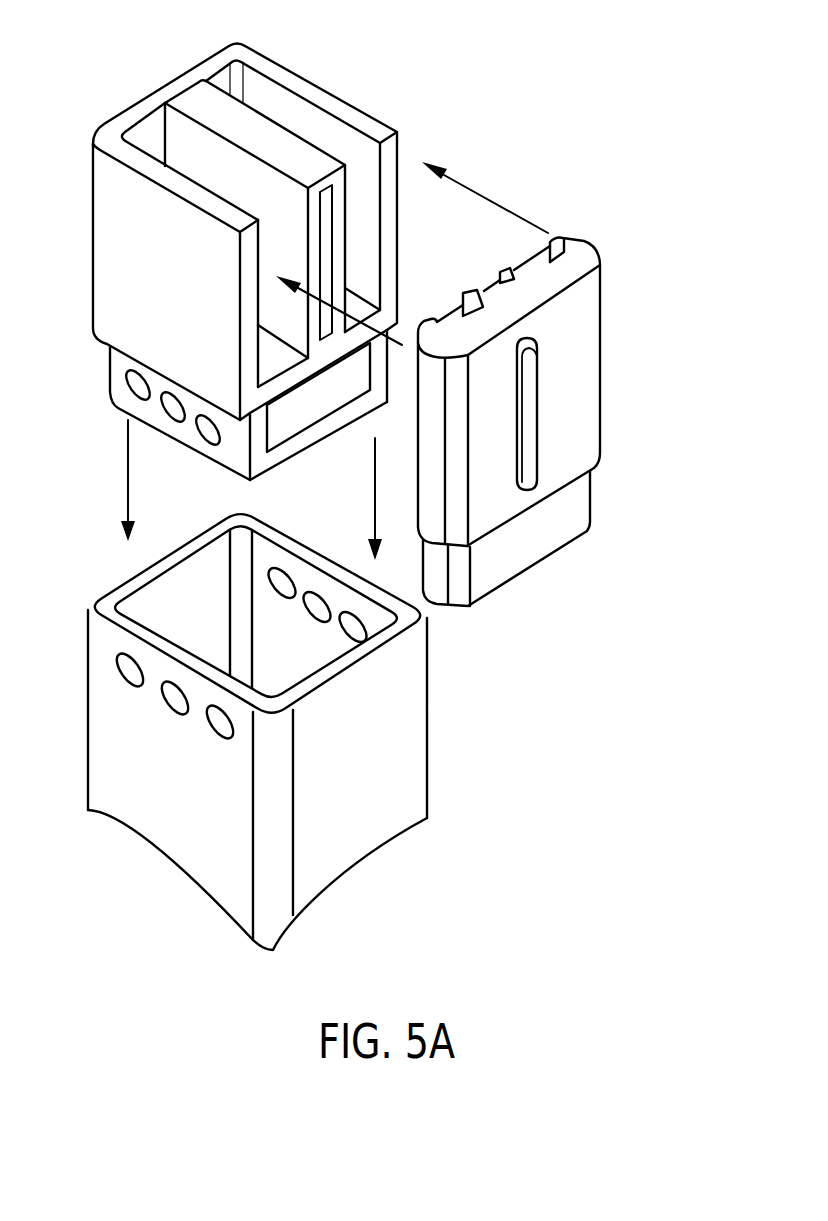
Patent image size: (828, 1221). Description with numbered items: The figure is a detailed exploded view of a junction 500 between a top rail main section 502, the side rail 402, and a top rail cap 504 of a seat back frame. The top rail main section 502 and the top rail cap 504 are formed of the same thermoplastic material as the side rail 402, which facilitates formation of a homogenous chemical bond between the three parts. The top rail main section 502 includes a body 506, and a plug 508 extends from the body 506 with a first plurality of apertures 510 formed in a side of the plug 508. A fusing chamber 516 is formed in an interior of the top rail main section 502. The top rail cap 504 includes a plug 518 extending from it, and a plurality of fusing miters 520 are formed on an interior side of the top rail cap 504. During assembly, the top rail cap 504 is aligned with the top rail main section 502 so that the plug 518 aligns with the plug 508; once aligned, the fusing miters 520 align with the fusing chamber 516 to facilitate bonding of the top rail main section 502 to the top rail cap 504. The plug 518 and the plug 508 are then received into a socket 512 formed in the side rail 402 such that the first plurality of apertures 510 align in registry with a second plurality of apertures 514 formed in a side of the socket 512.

The junction 500 is at (636, 182).
The top rail main section 502 is at (282, 77).
The top rail cap 504 is at (593, 443).
The body 506 is at (110, 255).
The plug 508 is at (290, 452).
The first plurality of apertures 510 is at (210, 437).
The socket 512 is at (177, 577).
The second plurality of apertures 514 is at (234, 735).
The fusing chamber 516 is at (327, 253).
The plug 518 is at (512, 560).
The fusing miters 520 is at (472, 293).
The side rail 402 is at (227, 903).